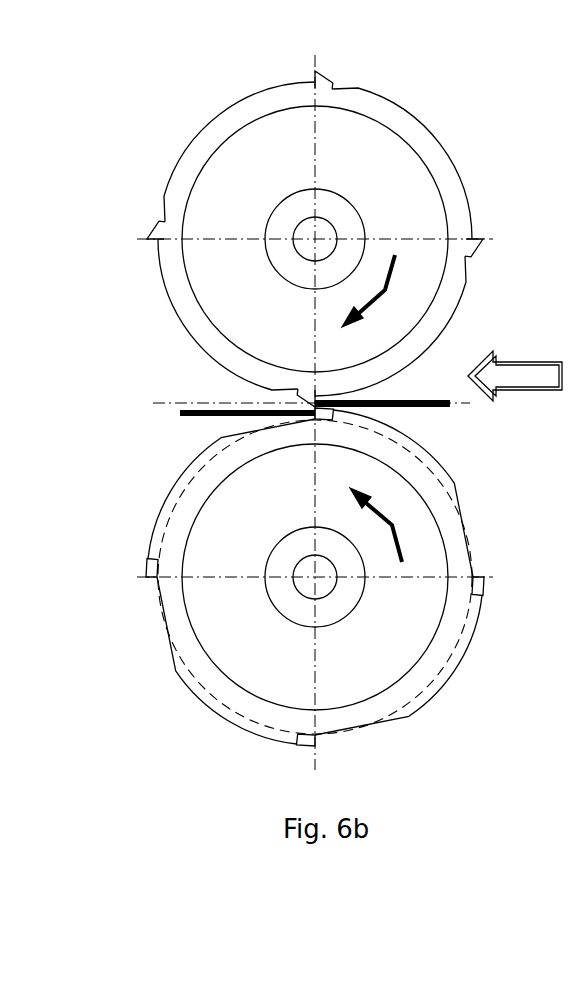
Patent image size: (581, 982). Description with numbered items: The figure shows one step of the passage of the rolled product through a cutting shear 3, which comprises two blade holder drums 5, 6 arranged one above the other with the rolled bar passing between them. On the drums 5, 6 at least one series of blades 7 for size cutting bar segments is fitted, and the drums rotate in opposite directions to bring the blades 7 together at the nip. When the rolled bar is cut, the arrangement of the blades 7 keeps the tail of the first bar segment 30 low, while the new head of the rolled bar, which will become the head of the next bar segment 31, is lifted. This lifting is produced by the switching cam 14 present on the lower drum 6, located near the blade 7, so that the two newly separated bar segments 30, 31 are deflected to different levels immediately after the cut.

The cutting shear 3 is at (497, 126).
The blade holder drum 5 is at (355, 148).
The blade holder drum 6 is at (218, 632).
The blade 7 is at (300, 392).
The switching cam 14 is at (167, 497).
The first bar segment 30 is at (185, 410).
The next bar segment 31 is at (408, 399).